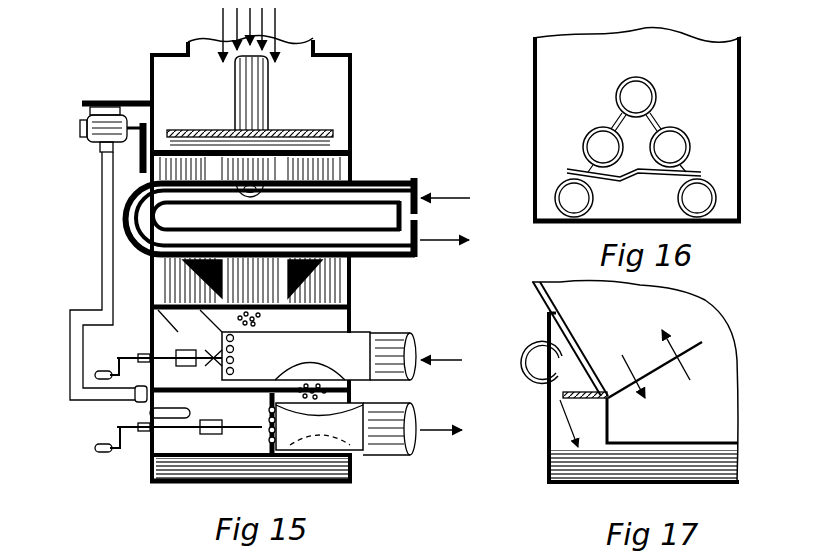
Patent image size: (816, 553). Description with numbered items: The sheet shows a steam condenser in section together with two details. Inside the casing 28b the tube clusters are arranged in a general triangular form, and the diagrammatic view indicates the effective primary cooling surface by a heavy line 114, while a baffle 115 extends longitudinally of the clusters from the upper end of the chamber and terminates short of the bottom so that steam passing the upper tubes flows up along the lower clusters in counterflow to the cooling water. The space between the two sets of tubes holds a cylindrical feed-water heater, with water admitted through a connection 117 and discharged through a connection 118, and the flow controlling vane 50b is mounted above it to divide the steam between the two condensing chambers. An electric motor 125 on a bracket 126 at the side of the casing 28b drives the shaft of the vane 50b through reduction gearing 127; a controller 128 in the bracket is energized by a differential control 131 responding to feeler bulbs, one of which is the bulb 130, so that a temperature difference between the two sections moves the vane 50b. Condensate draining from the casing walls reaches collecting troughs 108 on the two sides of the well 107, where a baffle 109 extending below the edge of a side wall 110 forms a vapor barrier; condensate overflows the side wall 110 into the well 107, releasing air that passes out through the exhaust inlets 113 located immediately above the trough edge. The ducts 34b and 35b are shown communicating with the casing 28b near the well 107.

In FIG. 15, the bracket 126 is at (148, 100).
In FIG. 15, the electric motor 125 is at (92, 140).
In FIG. 15, the controller 128 is at (105, 150).
In FIG. 15, the reduction gearing 127 is at (135, 168).
In FIG. 15, the flow controlling vane 50b is at (299, 136).
In FIG. 15, the casing 28b is at (352, 100).
In FIG. 15, the connection 117 is at (421, 196).
In FIG. 15, the connection 118 is at (421, 250).
In FIG. 15, the upper duct 34b is at (376, 334).
In FIG. 15, the lower duct 35b is at (410, 410).
In FIG. 15, the differential control 131 is at (135, 396).
In FIG. 15, the feeler bulb 130 is at (192, 413).
In FIG. 17, the feeler bulb 130 is at (611, 398).
In FIG. 16, the heavy line 114 is at (657, 97).
In FIG. 16, the baffle 115 is at (610, 176).
In FIG. 17, the inlet 113 is at (539, 342).
In FIG. 17, the baffle 109 is at (542, 376).
In FIG. 17, the side wall 110 is at (566, 392).
In FIG. 17, the collecting trough 108 is at (588, 404).
In FIG. 17, the well 107 is at (576, 482).